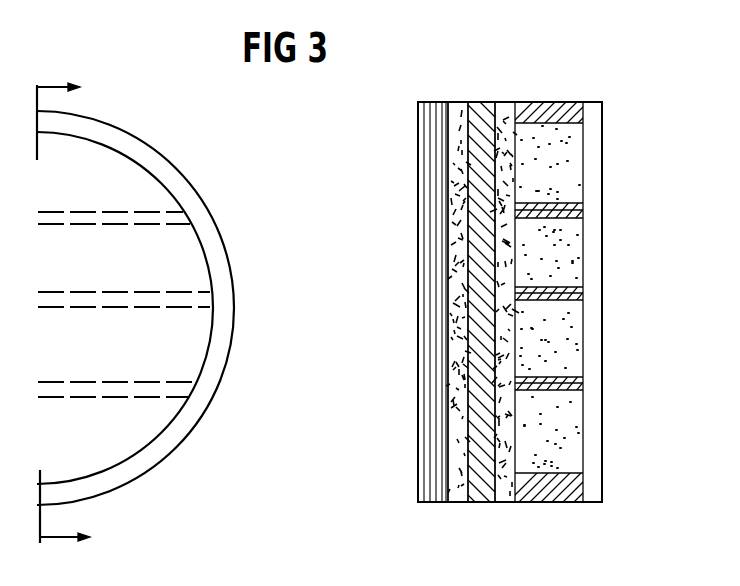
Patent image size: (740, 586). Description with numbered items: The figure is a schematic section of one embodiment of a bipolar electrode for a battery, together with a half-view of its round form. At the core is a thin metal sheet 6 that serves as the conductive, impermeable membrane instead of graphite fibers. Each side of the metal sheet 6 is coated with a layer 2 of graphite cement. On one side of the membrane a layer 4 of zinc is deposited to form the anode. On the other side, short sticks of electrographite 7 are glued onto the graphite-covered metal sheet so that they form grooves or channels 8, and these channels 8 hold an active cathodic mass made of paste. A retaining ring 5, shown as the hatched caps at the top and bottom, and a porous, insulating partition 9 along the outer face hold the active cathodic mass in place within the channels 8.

The layer of graphite cement 2 is at (465, 503).
The layer of zinc 4 is at (430, 363).
The retaining ring 5 is at (540, 102).
The thin metal sheet 6 is at (477, 102).
The short sticks of electrographite 7 is at (566, 205).
The grooves or channels 8 is at (570, 248).
The porous, insulating partition 9 is at (598, 322).